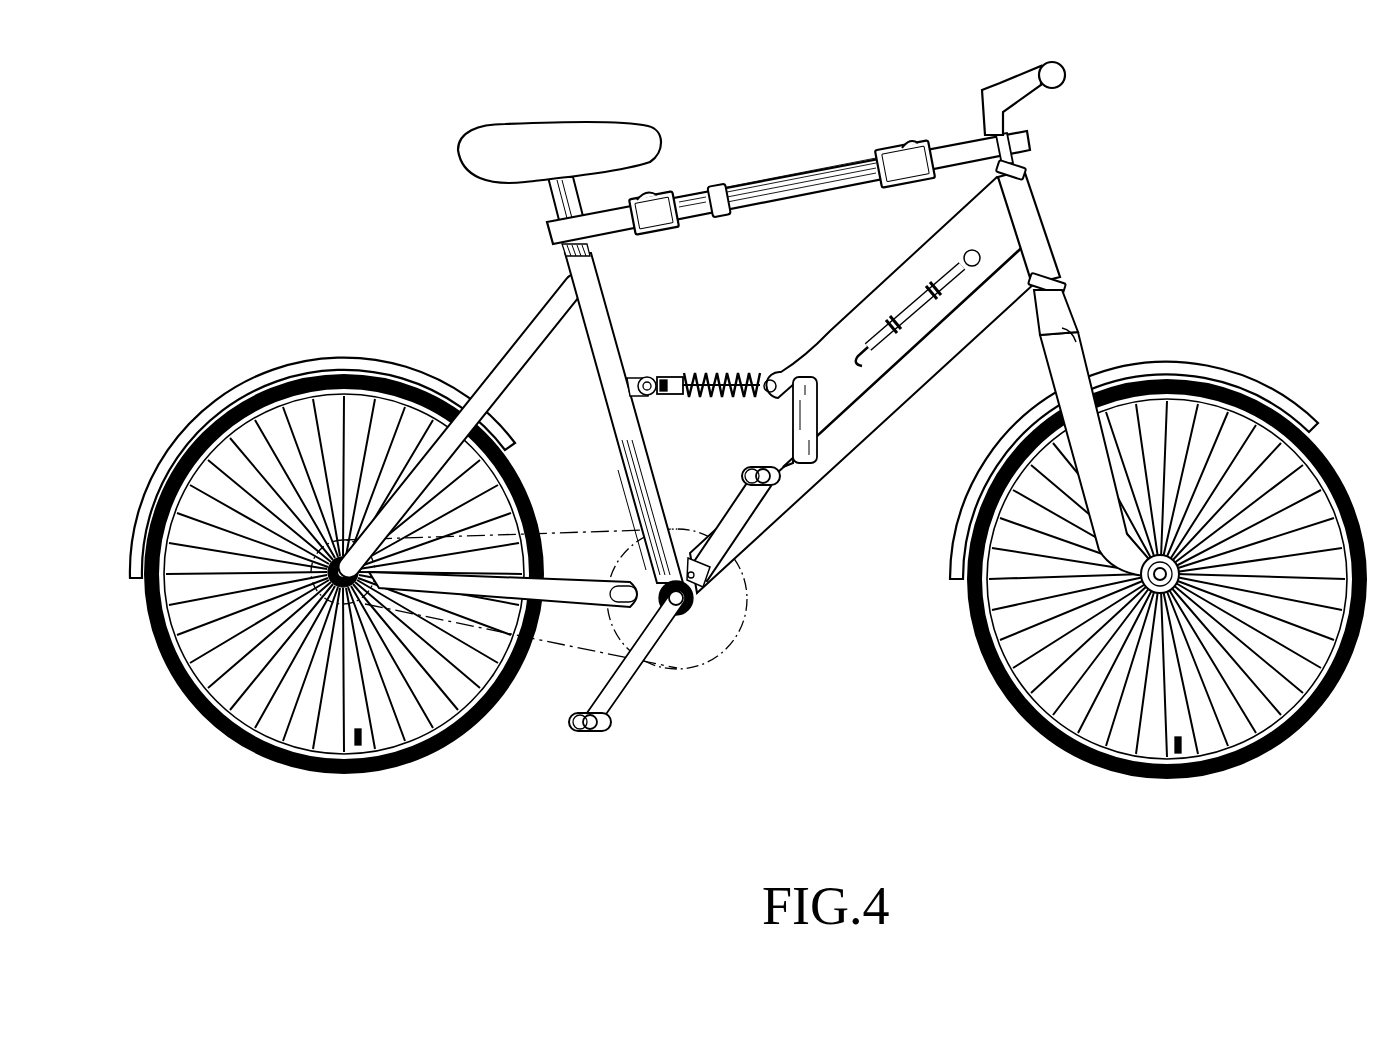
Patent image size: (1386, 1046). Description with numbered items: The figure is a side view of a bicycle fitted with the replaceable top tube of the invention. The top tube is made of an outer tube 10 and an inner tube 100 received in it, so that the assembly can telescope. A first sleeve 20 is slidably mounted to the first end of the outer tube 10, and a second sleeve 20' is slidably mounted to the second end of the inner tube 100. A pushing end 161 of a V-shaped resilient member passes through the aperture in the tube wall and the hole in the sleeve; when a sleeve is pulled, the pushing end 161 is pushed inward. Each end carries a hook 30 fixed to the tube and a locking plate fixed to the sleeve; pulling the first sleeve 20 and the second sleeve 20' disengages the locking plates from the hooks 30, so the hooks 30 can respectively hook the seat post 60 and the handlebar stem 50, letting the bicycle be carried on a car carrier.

The outer tube 10 is at (832, 162).
The first sleeve 20 is at (900, 135).
The second sleeve 20' is at (681, 243).
The first hook 30 is at (604, 226).
The handlebar stem 50 is at (1030, 150).
The seat post 60 is at (556, 190).
The inner tube 100 is at (697, 196).
The pushing end 161 is at (652, 194).